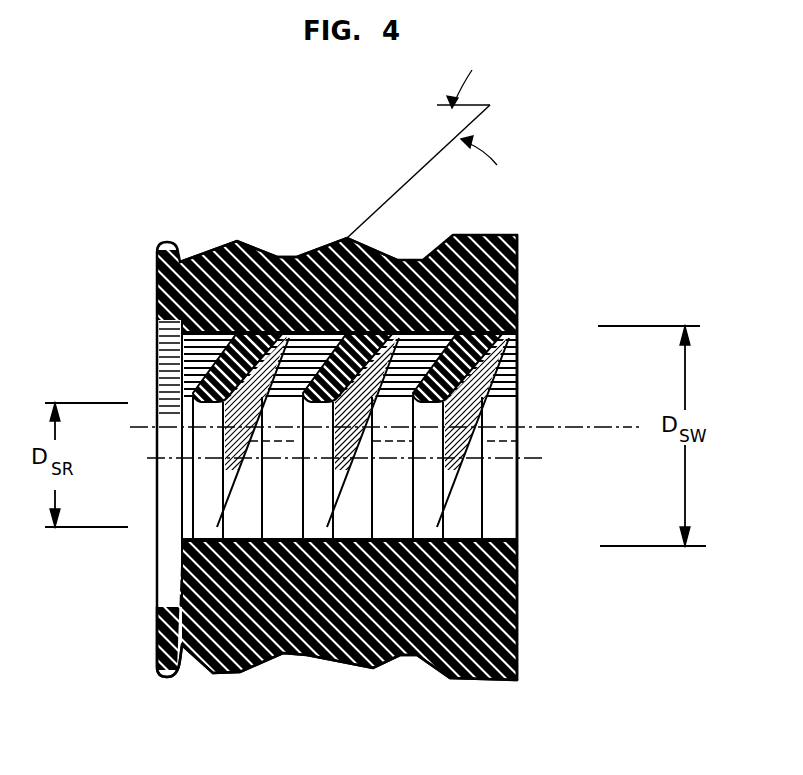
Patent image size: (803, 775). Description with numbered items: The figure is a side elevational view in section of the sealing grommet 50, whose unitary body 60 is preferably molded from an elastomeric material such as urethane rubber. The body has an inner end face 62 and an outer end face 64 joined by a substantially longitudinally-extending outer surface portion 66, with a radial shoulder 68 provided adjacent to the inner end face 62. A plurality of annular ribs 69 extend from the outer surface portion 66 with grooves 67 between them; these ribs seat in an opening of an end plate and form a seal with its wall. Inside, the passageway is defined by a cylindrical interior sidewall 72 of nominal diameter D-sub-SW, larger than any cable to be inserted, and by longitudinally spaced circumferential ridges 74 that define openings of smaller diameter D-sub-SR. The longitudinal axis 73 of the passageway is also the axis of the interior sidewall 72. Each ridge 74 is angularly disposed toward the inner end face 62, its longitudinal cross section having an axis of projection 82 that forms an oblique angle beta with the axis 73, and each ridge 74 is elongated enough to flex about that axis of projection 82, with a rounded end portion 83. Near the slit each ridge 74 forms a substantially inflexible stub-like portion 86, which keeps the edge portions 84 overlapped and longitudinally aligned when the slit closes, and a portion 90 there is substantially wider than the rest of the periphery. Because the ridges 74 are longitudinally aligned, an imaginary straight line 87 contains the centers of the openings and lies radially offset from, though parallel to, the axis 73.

The sealing grommet 50 is at (148, 268).
The unitary body 60 is at (517, 668).
The inner end face 62 is at (157, 616).
The outer end face 64 is at (517, 620).
The outer surface portion 66 is at (293, 256).
The grooves 67 is at (275, 256).
The radial shoulder 68 is at (157, 665).
The annular ribs 69 is at (348, 237).
The cylindrical interior sidewall 72 is at (503, 497).
The longitudinal axis 73 is at (597, 427).
The circumferential ridges 74 is at (513, 368).
The axis of projection 82 is at (430, 167).
The end portion 83 is at (177, 377).
The edge portions 84 is at (513, 541).
The stub-like portion 86 is at (330, 548).
The imaginary straight line 87 is at (545, 457).
The portion 90 is at (215, 525).